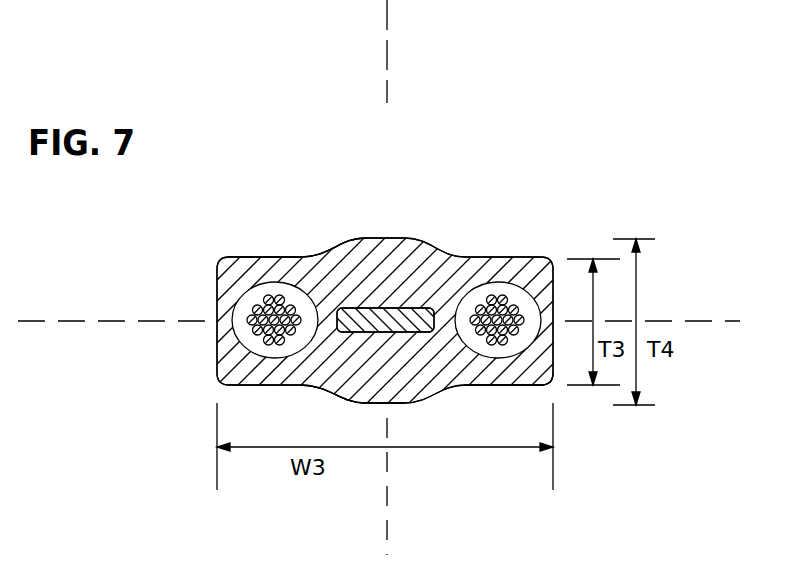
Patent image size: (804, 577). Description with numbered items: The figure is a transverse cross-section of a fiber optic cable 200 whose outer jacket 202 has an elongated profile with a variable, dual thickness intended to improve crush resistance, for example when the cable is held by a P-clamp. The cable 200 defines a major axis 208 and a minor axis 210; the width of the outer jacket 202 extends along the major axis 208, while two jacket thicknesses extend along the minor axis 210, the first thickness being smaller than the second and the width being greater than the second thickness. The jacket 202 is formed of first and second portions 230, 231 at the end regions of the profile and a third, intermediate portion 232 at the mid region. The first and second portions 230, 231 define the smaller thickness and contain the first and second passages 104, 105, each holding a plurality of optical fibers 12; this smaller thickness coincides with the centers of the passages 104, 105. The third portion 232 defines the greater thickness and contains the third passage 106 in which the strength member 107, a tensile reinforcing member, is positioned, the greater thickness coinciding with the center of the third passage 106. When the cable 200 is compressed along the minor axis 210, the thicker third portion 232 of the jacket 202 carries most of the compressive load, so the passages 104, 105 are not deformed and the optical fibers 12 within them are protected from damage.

The cable 200 is at (587, 168).
The outer jacket 202 is at (353, 238).
The major axis 208 is at (65, 322).
The minor axis 210 is at (386, 462).
The first portion 230 is at (250, 257).
The second portion 231 is at (490, 386).
The third portion 232 is at (368, 402).
The first passage 104 is at (280, 303).
The second passage 105 is at (487, 283).
The third passage 106 is at (365, 315).
The strength member 107 is at (392, 320).
The optical fibers 12 is at (275, 300).